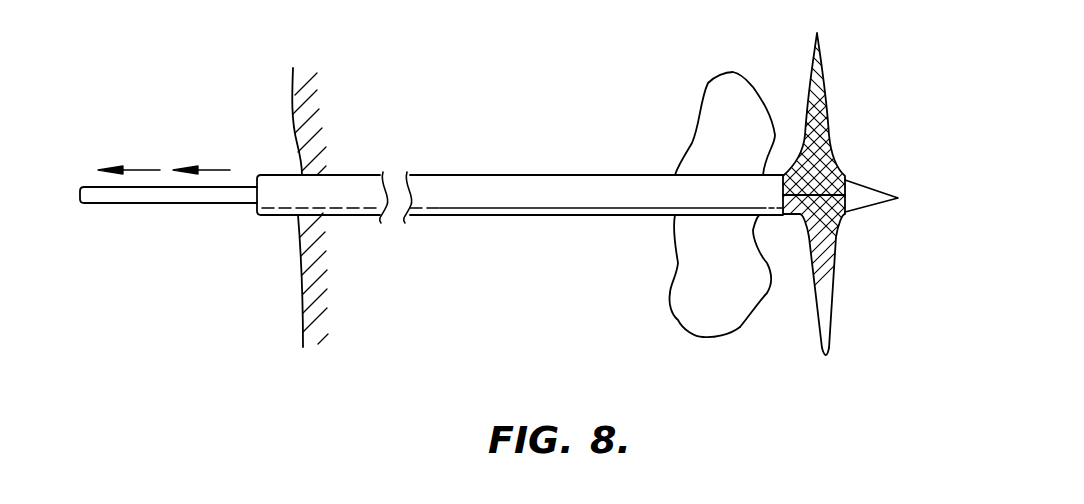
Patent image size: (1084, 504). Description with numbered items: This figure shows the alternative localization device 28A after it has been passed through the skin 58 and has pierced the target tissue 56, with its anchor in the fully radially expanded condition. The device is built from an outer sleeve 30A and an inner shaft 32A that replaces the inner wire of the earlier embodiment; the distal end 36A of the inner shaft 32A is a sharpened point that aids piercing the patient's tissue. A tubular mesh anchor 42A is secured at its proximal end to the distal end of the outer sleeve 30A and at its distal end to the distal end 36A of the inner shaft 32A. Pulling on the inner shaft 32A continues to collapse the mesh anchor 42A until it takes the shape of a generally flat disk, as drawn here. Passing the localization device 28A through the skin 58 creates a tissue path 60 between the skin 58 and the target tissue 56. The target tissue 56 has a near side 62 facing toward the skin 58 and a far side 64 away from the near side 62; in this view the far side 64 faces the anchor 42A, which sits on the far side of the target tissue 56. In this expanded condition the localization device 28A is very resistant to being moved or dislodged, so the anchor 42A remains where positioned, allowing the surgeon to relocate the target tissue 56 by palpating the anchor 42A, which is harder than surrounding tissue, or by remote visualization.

The localization device 28A is at (448, 100).
The outer sleeve 30A is at (502, 175).
The inner shaft 32A is at (140, 203).
The distal end of inner shaft 36A is at (865, 202).
The tubular mesh anchor 42A is at (827, 98).
The target tissue 56 is at (713, 230).
The skin 58 is at (300, 297).
The tissue path 60 is at (513, 215).
The near side 62 is at (673, 258).
The far side 64 is at (773, 280).